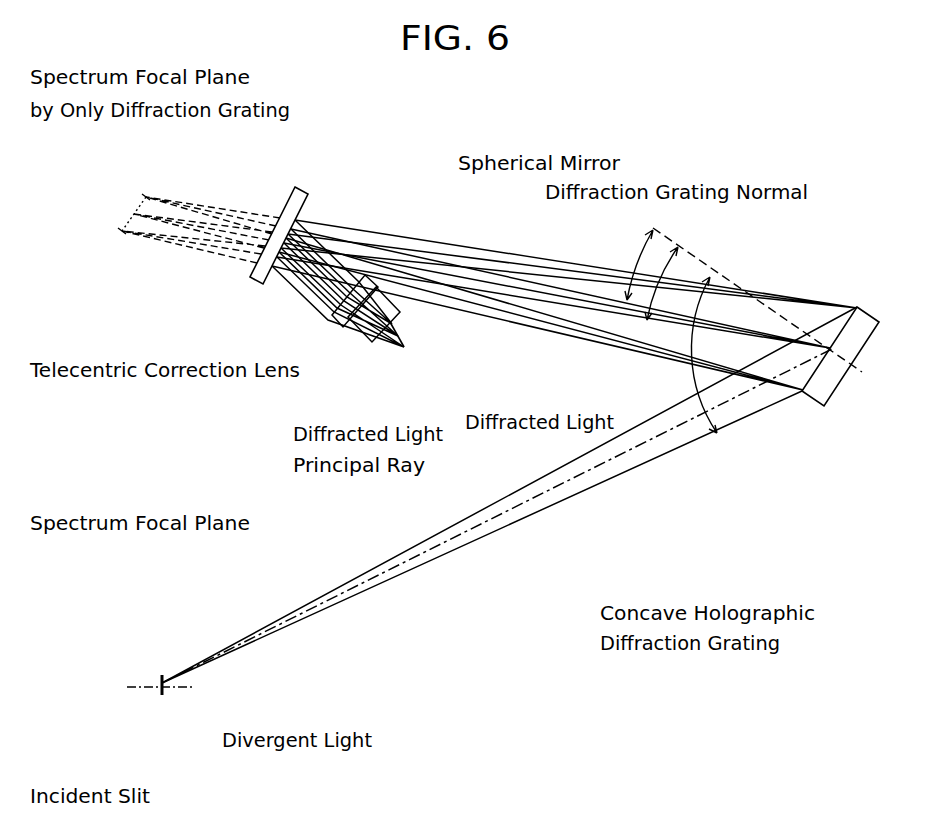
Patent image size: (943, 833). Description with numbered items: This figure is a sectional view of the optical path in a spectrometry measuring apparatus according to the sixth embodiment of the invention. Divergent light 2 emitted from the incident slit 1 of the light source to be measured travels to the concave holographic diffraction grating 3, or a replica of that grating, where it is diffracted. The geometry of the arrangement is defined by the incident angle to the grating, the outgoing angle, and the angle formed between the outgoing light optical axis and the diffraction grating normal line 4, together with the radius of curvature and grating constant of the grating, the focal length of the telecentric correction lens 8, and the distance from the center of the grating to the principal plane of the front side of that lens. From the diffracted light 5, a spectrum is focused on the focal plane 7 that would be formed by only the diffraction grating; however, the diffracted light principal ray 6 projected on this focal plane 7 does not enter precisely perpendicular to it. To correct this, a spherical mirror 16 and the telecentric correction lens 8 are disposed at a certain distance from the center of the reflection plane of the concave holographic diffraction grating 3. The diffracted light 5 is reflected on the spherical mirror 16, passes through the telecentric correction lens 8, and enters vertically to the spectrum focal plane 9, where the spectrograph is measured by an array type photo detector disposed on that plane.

The incident slit 1 is at (157, 683).
The divergent light 2 is at (420, 548).
The concave holographic diffraction grating 3 is at (822, 383).
The diffraction grating normal line 4 is at (696, 262).
The diffracted light 5 is at (583, 332).
The diffracted light principal ray 6 is at (490, 293).
The focal plane formed by only the diffraction grating 7 is at (142, 200).
The telecentric correction lens 8 is at (333, 317).
The spectrum focal plane 9 is at (380, 345).
The spherical mirror 16 is at (308, 195).